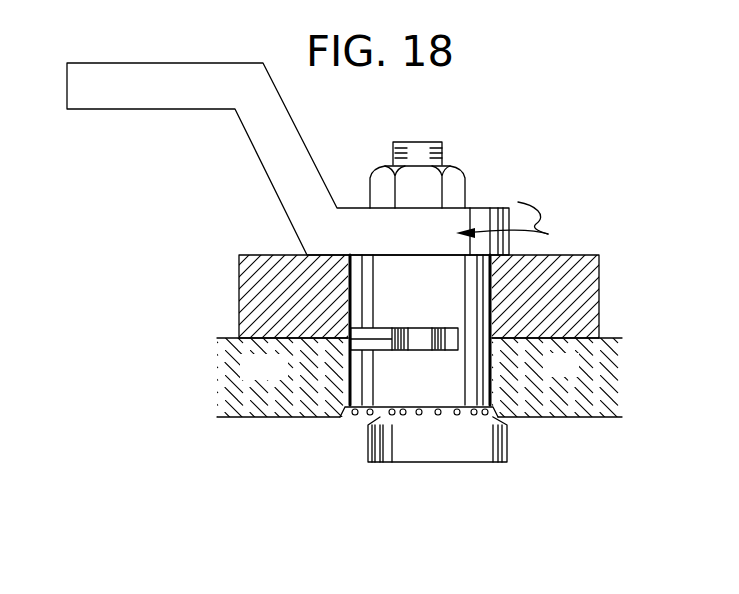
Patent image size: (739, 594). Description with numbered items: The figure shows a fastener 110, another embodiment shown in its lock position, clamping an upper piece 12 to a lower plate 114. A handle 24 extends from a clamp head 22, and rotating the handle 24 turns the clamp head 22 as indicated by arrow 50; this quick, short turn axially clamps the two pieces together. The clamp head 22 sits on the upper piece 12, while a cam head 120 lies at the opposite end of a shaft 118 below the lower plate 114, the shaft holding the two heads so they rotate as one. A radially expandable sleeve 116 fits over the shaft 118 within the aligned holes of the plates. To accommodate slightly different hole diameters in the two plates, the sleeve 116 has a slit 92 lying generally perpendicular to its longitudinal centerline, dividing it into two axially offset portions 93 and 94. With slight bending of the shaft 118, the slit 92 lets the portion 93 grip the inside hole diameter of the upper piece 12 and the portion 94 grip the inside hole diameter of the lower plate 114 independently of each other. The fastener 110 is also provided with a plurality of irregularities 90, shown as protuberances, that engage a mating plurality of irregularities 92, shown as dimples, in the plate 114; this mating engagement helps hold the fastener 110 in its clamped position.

The handle 24 is at (115, 110).
The clamp head 22 is at (482, 208).
The piece 12 is at (238, 277).
The plate 114 is at (345, 345).
The sleeve portion 93 is at (367, 291).
The sleeve 116 is at (490, 302).
The sleeve portion 94 is at (368, 377).
The irregularities / slit 92 is at (383, 352).
The shaft 118 is at (420, 338).
The irregularities 90 is at (493, 407).
The cam head 120 is at (435, 462).
The arrow 50 is at (548, 234).
The fastener 110 is at (692, 146).